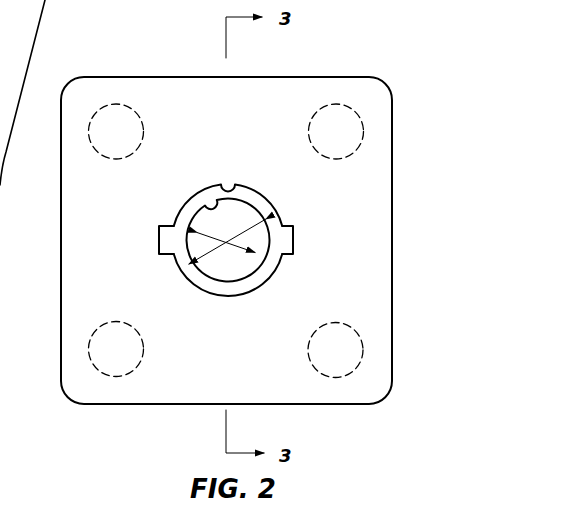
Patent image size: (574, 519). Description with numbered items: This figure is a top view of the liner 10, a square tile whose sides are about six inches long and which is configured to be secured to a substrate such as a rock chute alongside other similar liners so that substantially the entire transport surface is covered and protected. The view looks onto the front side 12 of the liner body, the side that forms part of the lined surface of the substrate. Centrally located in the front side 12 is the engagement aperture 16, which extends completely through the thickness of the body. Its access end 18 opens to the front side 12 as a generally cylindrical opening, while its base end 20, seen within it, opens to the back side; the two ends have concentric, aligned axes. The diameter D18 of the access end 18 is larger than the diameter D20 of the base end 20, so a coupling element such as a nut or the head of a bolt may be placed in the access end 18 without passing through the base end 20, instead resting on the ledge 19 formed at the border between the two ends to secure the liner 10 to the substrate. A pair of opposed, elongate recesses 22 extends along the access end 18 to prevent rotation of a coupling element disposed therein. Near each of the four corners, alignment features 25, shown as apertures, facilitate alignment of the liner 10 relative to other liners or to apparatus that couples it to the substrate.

The liner 10 is at (208, 211).
The front side 12 is at (366, 97).
The engagement aperture 16 is at (160, 265).
The access end 18 is at (237, 186).
The ledge 19 is at (231, 218).
The base end 20 is at (206, 205).
The elongate recesses 22 is at (294, 237).
The alignment features 25 is at (90, 144).
The diameter of access end D18 is at (240, 234).
The diameter of base end D20 is at (222, 284).